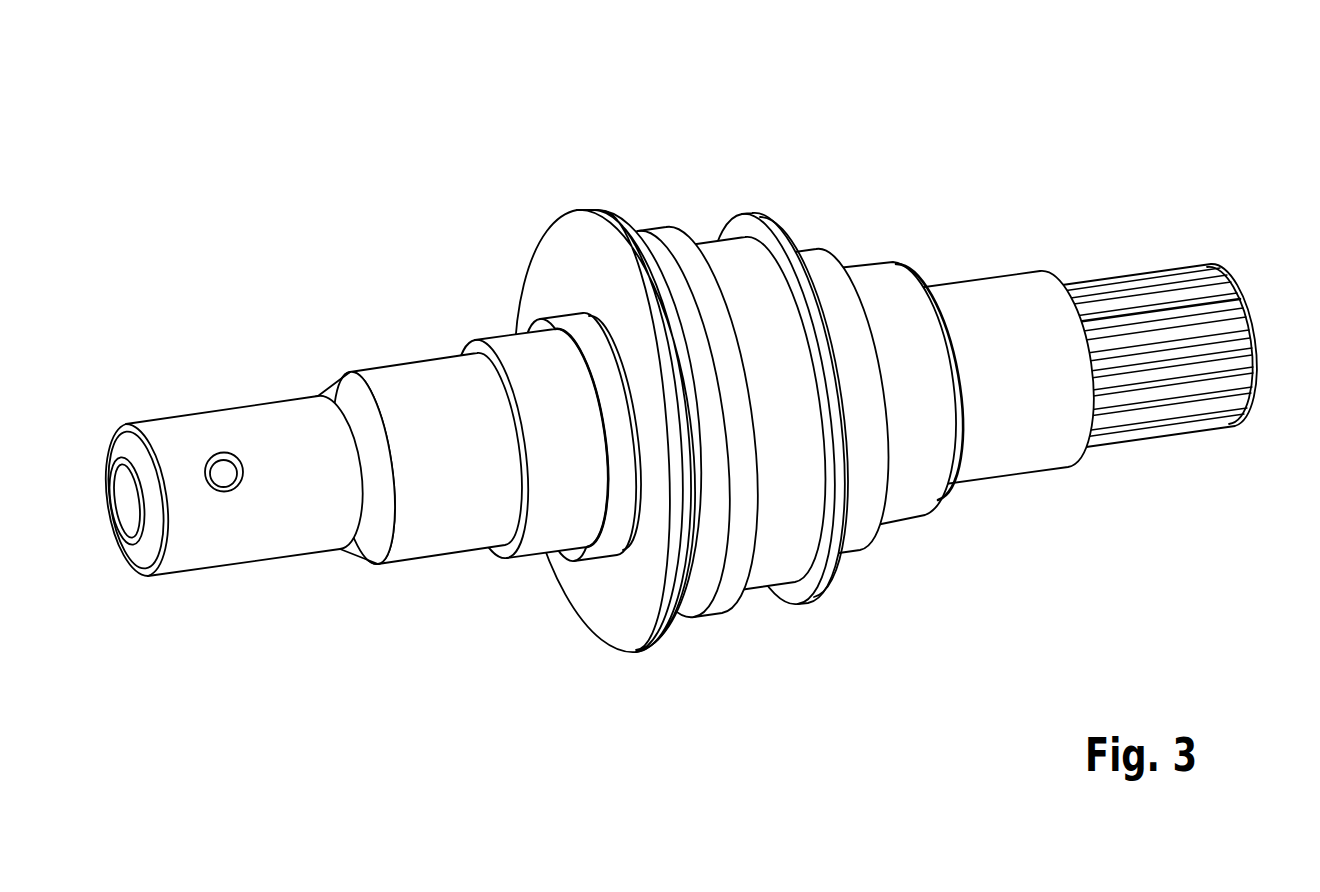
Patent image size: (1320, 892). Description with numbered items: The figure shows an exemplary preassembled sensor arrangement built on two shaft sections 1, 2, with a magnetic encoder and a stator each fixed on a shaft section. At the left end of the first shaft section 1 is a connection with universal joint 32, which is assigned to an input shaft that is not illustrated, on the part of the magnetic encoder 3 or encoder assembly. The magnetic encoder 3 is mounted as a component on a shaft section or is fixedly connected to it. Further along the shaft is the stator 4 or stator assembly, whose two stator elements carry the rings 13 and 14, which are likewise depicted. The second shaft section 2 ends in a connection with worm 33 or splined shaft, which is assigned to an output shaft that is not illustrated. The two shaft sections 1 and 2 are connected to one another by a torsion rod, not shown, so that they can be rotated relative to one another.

The shaft section 1 is at (392, 365).
The shaft section 2 is at (1012, 476).
The magnetic encoder 3 is at (640, 658).
The stator 4 is at (708, 170).
The ring 13 is at (663, 224).
The ring 14 is at (753, 211).
The connection with universal joint 32 is at (248, 563).
The connection with worm 33 is at (1170, 266).